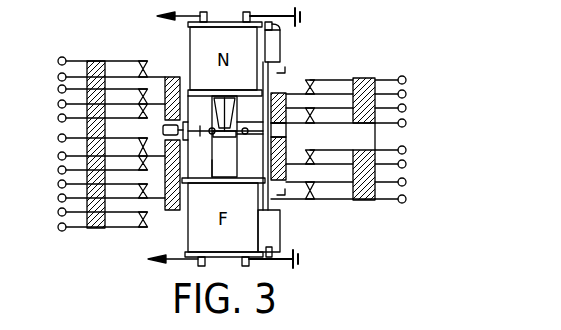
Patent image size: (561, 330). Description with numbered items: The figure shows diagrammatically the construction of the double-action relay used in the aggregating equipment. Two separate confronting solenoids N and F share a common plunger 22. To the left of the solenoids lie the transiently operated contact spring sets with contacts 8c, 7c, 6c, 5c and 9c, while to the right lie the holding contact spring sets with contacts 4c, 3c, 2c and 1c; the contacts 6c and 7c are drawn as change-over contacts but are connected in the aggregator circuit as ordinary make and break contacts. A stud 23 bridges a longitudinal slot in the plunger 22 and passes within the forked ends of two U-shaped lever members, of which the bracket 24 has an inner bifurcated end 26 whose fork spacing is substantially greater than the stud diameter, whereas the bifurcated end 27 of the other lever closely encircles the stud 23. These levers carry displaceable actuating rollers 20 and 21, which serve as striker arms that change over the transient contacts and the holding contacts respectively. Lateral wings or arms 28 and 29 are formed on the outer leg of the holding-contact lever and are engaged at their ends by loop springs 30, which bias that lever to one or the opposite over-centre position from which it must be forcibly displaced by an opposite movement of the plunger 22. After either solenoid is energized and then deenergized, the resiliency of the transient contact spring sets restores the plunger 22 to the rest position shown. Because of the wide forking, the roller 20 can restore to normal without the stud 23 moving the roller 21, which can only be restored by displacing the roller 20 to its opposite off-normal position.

The transient contact 8c is at (147, 69).
The transient change-over contact 7c is at (139, 99).
The transient change-over contact 6c is at (139, 161).
The transient contact 5c is at (147, 192).
The transient contact 9c is at (146, 220).
The holding contact 4c is at (314, 83).
The holding contact 3c is at (314, 114).
The holding contact 2c is at (314, 157).
The holding contact 1c is at (316, 190).
The actuating roller 20 is at (163, 130).
The actuating roller 21 is at (287, 130).
The plunger 22 is at (213, 162).
The stud 23 is at (216, 125).
The U-shaped bracket 24 is at (200, 136).
The bifurcated end 26 is at (221, 124).
The bifurcated end 27 is at (233, 124).
The lateral wing 28 is at (276, 194).
The lateral wing 29 is at (271, 84).
The loop spring 30 is at (281, 44).